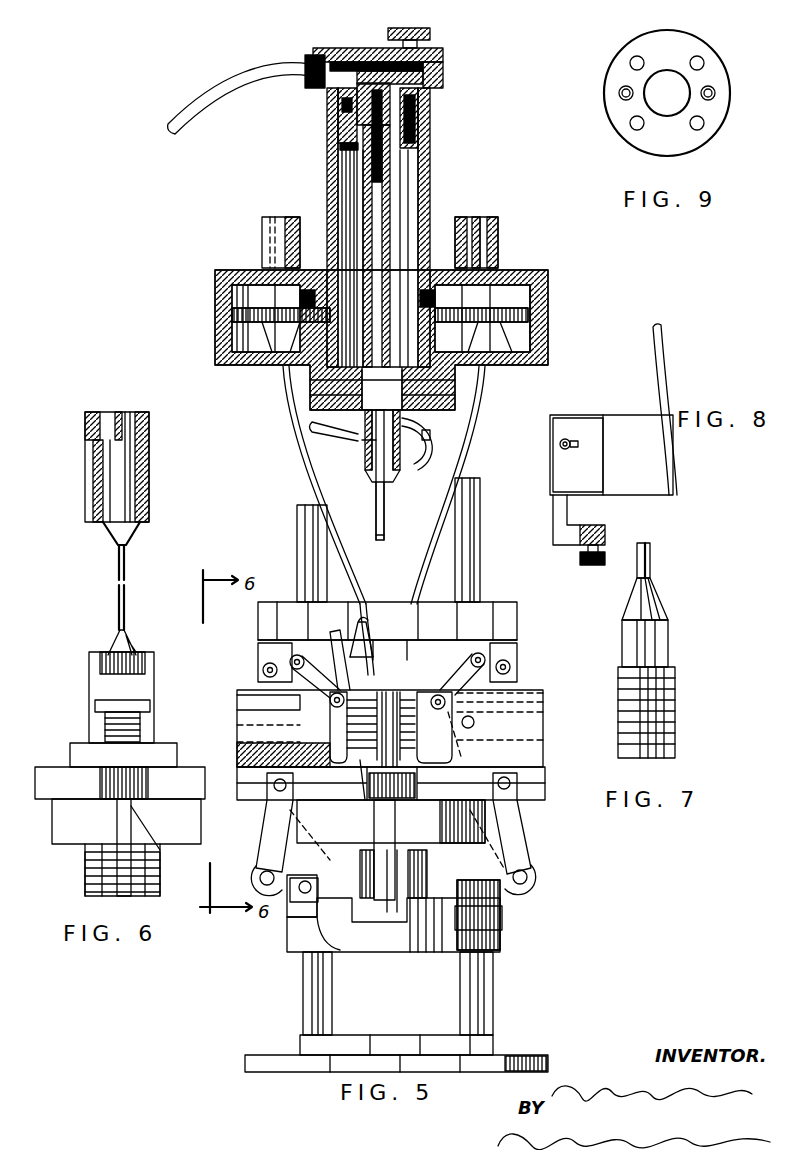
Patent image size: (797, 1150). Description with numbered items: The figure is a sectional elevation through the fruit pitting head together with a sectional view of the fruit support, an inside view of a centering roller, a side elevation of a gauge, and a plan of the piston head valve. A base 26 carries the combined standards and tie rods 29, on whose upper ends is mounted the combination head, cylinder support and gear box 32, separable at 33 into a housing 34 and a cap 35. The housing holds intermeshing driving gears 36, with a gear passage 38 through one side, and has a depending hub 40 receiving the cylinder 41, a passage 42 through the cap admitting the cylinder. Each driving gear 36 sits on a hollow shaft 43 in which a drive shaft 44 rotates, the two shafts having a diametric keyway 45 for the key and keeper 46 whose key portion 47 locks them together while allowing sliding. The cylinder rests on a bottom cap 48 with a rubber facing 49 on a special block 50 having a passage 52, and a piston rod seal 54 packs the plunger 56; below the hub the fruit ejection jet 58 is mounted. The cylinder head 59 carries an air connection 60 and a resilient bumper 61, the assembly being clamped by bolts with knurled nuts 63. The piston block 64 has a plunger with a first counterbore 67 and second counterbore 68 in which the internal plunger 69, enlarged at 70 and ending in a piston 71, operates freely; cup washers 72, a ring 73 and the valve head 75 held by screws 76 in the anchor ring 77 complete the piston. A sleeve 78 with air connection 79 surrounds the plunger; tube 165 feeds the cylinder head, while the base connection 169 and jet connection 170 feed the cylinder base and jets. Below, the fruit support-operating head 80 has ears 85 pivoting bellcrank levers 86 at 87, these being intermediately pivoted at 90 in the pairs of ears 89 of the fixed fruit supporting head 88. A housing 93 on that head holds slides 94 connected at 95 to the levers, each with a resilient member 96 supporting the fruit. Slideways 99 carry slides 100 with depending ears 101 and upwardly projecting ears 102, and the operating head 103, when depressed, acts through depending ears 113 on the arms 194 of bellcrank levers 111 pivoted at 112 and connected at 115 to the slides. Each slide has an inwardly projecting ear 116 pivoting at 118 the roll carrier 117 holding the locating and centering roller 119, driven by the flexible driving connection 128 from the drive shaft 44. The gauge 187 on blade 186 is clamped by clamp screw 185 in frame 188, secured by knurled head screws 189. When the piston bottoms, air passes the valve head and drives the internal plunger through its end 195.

In FIG. 5, the base 26 is at (508, 1054).
In FIG. 5, the combined standards and tie rods 29 is at (298, 522).
In FIG. 5, the combination head, cylinder support and gear box 32 is at (550, 304).
In FIG. 5, the separation line of gear box 33 is at (550, 287).
In FIG. 5, the housing 34 is at (548, 340).
In FIG. 5, the cap 35 is at (216, 276).
In FIG. 5, the driving gears 36 is at (532, 284).
In FIG. 5, the gear passage 38 is at (216, 312).
In FIG. 5, the depending hub 40 is at (458, 388).
In FIG. 5, the cylinder 41 is at (430, 184).
In FIG. 5, the passage 42 is at (412, 222).
In FIG. 5, the hollow shaft 43 is at (496, 250).
In FIG. 6, the hollow shaft 43 is at (150, 478).
In FIG. 5, the drive shaft 44 is at (272, 368).
In FIG. 6, the drive shaft 44 is at (108, 496).
In FIG. 5, the diametric keyway 45 is at (482, 238).
In FIG. 5, the key and keeper 46 is at (262, 232).
In FIG. 6, the key and keeper 46 is at (85, 432).
In FIG. 5, the key portion 47 is at (478, 220).
In FIG. 6, the key portion 47 is at (118, 414).
In FIG. 5, the bottom cap 48 is at (318, 412).
In FIG. 5, the rubber facing 49 is at (314, 396).
In FIG. 5, the special block 50 is at (456, 400).
In FIG. 5, the passage 52 is at (448, 430).
In FIG. 5, the piston rod seal 54 is at (318, 440).
In FIG. 5, the plunger 56 is at (398, 162).
In FIG. 5, the fruit ejection jet 58 is at (402, 462).
In FIG. 5, the cylinder head 59 is at (446, 66).
In FIG. 5, the air connection 60 is at (310, 58).
In FIG. 5, the resilient bumper 61 is at (375, 48).
In FIG. 5, the knurled nuts 63 is at (432, 36).
In FIG. 5, the piston block 64 is at (338, 127).
In FIG. 5, the first counterbore 67 is at (358, 204).
In FIG. 5, the second counterbore 68 is at (384, 128).
In FIG. 5, the internal plunger 69 is at (385, 528).
In FIG. 5, the enlarged portion 70 is at (366, 172).
In FIG. 5, the piston 71 is at (336, 108).
In FIG. 5, the cup washers 72 is at (420, 120).
In FIG. 5, the ring 73 is at (420, 104).
In FIG. 5, the valve head 75 is at (430, 80).
In FIG. 9, the valve head 75 is at (614, 112).
In FIG. 5, the screws 76 is at (340, 145).
In FIG. 5, the anchor ring 77 is at (338, 156).
In FIG. 5, the sleeve 78 is at (378, 490).
In FIG. 5, the air connection 79 is at (366, 444).
In FIG. 5, the fruit support-operating head 80 is at (295, 940).
In FIG. 5, the ears 85 is at (300, 900).
In FIG. 5, the bellcrank levers 86 is at (504, 896).
In FIG. 6, the bellcrank levers 86 is at (92, 880).
In FIG. 5, the pivot 87 is at (335, 950).
In FIG. 5, the fruit supporting head 88 is at (510, 826).
In FIG. 5, the pairs of ears 89 is at (520, 856).
In FIG. 5, the intermediate pivot 90 is at (266, 872).
In FIG. 5, the housing 93 is at (530, 782).
In FIG. 6, the housing 93 is at (50, 796).
In FIG. 6, the slides 94 is at (100, 770).
In FIG. 6, the connection 95 is at (118, 790).
In FIG. 6, the resilient member 96 is at (140, 845).
In FIG. 5, the slideways 99 is at (543, 748).
In FIG. 6, the slideways 99 is at (90, 726).
In FIG. 5, the slide 100 is at (270, 702).
In FIG. 5, the depending ear 101 is at (330, 704).
In FIG. 6, the depending ear 101 is at (108, 708).
In FIG. 5, the upwardly projecting ear 102 is at (292, 682).
In FIG. 5, the operating head 103 is at (272, 618).
In FIG. 5, the bellcrank levers 111 is at (540, 704).
In FIG. 5, the pivot 112 is at (488, 658).
In FIG. 5, the depending ears 113 is at (500, 640).
In FIG. 5, the pivotal connection 115 is at (540, 722).
In FIG. 5, the inwardly projecting ear 116 is at (335, 652).
In FIG. 5, the roll carrier 117 is at (448, 744).
In FIG. 7, the roll carrier 117 is at (676, 720).
In FIG. 5, the pivot 118 is at (490, 640).
In FIG. 5, the locating and centering roller 119 is at (430, 640).
In FIG. 6, the locating and centering roller 119 is at (110, 648).
In FIG. 7, the locating and centering roller 119 is at (668, 686).
In FIG. 5, the flexible driving connection 128 is at (418, 562).
In FIG. 6, the flexible driving connection 128 is at (128, 566).
In FIG. 7, the flexible driving connection 128 is at (651, 560).
In FIG. 5, the tube 165 is at (208, 92).
In FIG. 5, the base connection 169 is at (430, 432).
In FIG. 5, the jet connection 170 is at (358, 452).
In FIG. 8, the clamp screw 185 is at (567, 440).
In FIG. 8, the blade 186 is at (626, 428).
In FIG. 5, the gauge 187 is at (320, 600).
In FIG. 8, the gauge 187 is at (668, 380).
In FIG. 8, the frame 188 is at (566, 476).
In FIG. 8, the knurled head screws 189 is at (606, 544).
In FIG. 5, the arms 194 is at (512, 669).
In FIG. 5, the end 195 is at (378, 526).